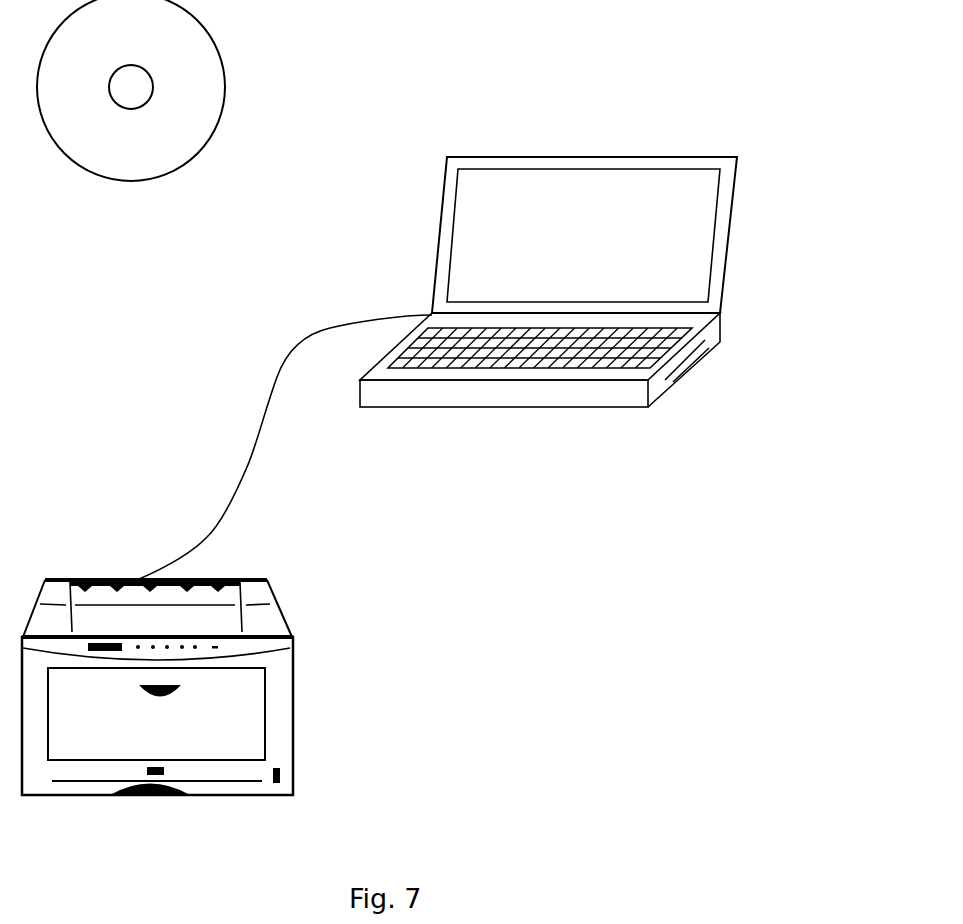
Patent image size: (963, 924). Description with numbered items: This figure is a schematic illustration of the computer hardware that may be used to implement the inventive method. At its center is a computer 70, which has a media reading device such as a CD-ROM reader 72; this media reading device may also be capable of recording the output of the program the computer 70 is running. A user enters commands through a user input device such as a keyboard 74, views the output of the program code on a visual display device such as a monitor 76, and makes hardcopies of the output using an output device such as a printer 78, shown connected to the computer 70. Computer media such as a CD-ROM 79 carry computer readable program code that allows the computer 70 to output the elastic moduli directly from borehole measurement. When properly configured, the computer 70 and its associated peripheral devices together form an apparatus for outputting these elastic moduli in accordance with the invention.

The computer 70 is at (607, 283).
The CD-ROM reader 72 is at (663, 378).
The keyboard 74 is at (523, 368).
The monitor 76 is at (598, 190).
The printer 78 is at (293, 710).
The CD-ROM 79 is at (207, 27).